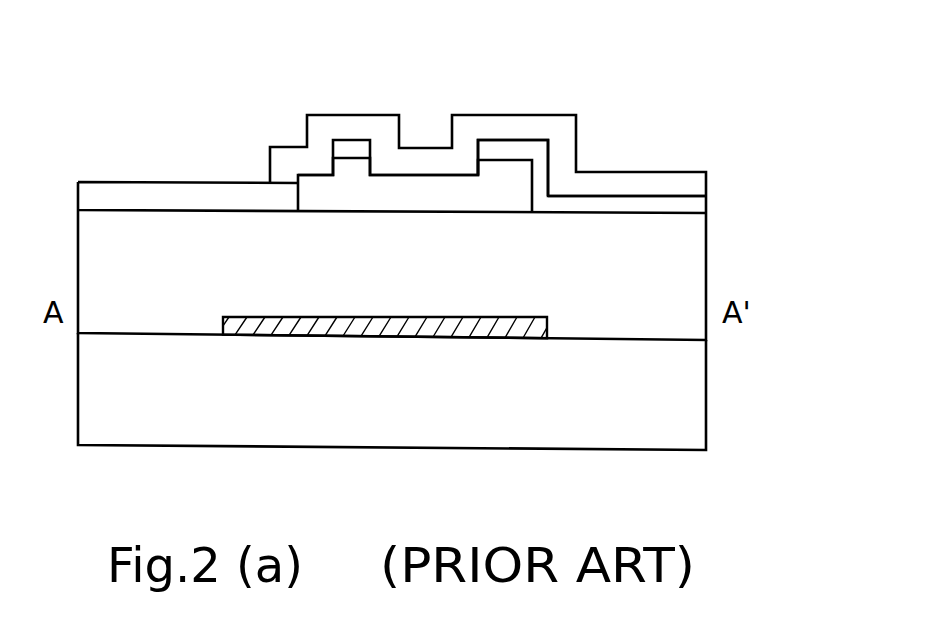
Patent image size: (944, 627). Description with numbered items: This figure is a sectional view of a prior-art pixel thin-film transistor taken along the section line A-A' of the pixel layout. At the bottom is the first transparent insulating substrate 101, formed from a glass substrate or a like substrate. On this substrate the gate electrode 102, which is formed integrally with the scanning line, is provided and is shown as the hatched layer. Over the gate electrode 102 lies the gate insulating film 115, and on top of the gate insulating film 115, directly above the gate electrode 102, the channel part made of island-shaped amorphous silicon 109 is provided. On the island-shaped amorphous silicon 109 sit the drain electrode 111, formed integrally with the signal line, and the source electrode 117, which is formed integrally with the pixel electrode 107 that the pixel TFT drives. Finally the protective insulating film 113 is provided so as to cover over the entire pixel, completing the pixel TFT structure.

The first transparent insulating substrate 101 is at (688, 387).
The gate electrode 102 is at (382, 333).
The gate insulating film 115 is at (693, 245).
The pixel electrode 107 is at (693, 207).
The island-shaped amorphous silicon 109 is at (300, 188).
The drain electrode 111 is at (350, 140).
The source electrode 117 is at (505, 147).
The protective insulating film 113 is at (580, 175).